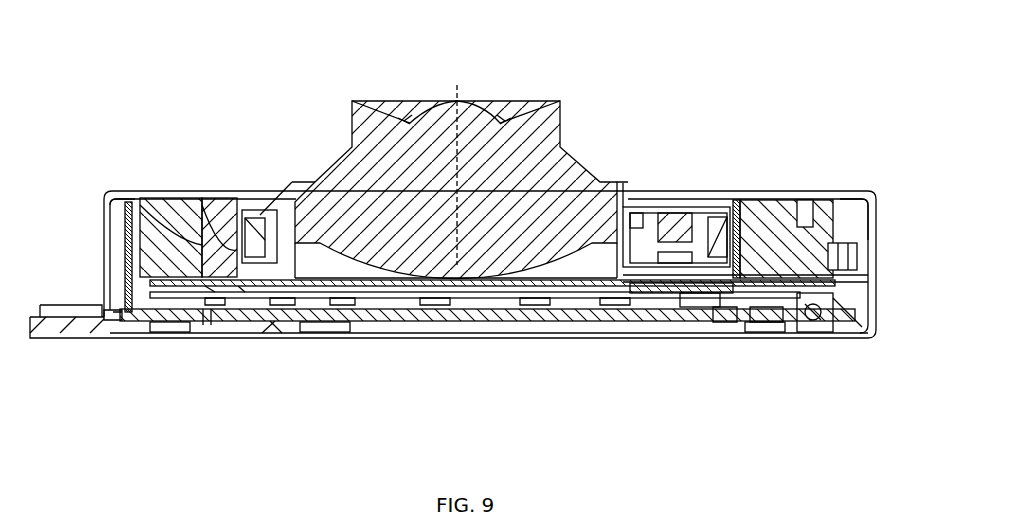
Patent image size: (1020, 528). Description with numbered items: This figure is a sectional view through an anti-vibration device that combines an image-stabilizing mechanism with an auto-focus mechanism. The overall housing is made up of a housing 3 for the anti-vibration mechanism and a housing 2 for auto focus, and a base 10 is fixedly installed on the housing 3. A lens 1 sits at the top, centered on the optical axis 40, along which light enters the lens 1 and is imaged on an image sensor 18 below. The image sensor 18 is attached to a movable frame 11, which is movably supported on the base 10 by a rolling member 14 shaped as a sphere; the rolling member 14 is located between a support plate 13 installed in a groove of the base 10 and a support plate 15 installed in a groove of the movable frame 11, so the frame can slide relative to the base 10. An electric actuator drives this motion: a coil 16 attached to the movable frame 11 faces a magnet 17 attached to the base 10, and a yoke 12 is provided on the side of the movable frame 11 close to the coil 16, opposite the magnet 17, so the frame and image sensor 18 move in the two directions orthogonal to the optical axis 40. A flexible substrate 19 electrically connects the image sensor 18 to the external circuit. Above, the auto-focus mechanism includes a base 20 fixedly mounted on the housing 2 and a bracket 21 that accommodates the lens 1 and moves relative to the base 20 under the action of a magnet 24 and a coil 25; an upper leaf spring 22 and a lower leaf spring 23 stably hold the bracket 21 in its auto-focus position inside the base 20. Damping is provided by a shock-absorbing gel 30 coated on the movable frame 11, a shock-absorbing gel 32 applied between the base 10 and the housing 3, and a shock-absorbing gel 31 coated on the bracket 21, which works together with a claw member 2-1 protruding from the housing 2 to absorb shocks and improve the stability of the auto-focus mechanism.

The lens 1 is at (527, 162).
The housing for auto focus 2 is at (104, 247).
The claw member 2-1 is at (668, 208).
The housing for the anti-vibration mechanism 3 is at (605, 338).
The base 10 is at (762, 327).
The movable frame for the anti-vibration mechanism 11 is at (707, 284).
The yoke for the anti-vibration mechanism 12 is at (245, 292).
The support plate for the first anti-vibration mechanism 13 is at (873, 328).
The rolling member for the anti-vibration mechanism 14 is at (817, 317).
The support plate for the second anti-vibration mechanism 15 is at (810, 323).
The coil for the anti-vibration mechanism 16 is at (207, 322).
The magnet for the anti-vibration mechanism 17 is at (218, 300).
The image sensor 18 is at (417, 313).
The flexible substrate for the anti-vibration mechanism 19 is at (130, 265).
The base for the auto-focus mechanism 20 is at (857, 218).
The bracket for auto focus 21 is at (280, 232).
The upper leaf spring for auto focus 22 is at (265, 215).
The lower leaf spring for auto focus 23 is at (118, 210).
The magnet for auto focus 24 is at (200, 225).
The coil for auto focus 25 is at (720, 235).
The shock-absorbing gel for the first anti-vibration mechanism 30 is at (853, 277).
The shock-absorbing gel for auto focus 31 is at (682, 220).
The shock-absorbing gel for the second anti-vibration mechanism 32 is at (278, 330).
The optical axis 40 is at (464, 78).